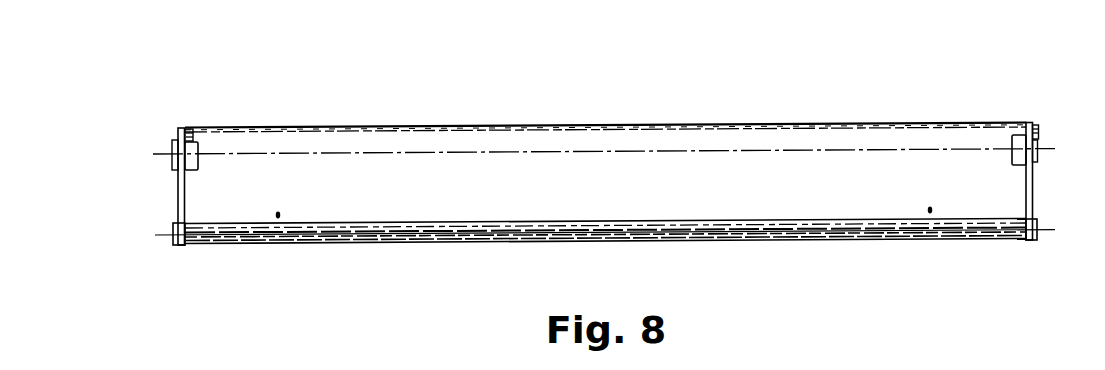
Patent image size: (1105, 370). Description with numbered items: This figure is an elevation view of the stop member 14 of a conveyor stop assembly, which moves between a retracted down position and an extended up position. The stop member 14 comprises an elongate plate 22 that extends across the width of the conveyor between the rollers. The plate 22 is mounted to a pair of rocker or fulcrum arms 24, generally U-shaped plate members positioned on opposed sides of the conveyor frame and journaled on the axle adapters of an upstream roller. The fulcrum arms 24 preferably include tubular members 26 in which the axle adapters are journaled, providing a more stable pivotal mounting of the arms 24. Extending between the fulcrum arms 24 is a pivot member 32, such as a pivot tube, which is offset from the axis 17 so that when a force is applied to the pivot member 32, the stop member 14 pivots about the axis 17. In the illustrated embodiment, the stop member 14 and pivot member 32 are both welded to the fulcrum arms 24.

The stop member 14 is at (595, 163).
The axis 17 is at (167, 152).
The elongate plate 22 is at (723, 138).
The fulcrum arms 24 is at (176, 192).
The tubular members 26 is at (188, 140).
The pivot member 32 is at (452, 243).